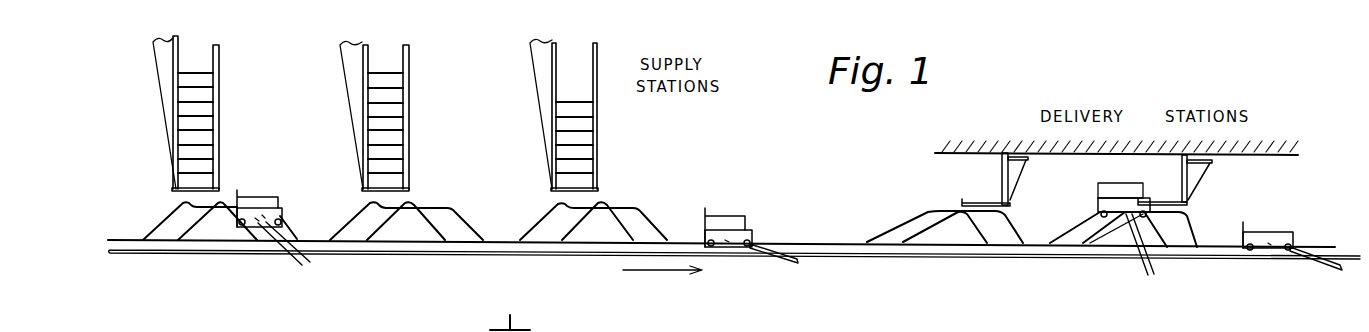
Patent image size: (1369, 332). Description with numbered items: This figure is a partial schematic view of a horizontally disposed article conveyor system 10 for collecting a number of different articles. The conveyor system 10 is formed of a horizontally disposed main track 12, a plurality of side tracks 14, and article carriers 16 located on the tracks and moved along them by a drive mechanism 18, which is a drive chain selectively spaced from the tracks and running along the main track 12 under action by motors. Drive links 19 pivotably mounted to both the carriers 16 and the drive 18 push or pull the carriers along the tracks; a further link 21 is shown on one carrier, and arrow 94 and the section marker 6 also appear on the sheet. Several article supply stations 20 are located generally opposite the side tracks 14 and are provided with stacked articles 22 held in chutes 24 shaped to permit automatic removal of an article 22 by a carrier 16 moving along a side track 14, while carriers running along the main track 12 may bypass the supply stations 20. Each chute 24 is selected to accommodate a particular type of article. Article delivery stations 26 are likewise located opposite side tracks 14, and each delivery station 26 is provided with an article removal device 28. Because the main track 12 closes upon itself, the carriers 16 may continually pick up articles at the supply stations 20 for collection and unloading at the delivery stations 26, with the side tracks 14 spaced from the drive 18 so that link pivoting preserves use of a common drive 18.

The section line 6- 6 is at (480, 328).
The article conveyor system 10 is at (793, 180).
The main track 12 is at (786, 250).
The side track 14 is at (148, 216).
The article carrier 16 is at (283, 210).
The drive mechanism 18 is at (843, 258).
The drive link 19 is at (278, 256).
The article supply station 20 is at (340, 139).
The finger 21 is at (776, 264).
The article 22 is at (203, 101).
The chute 24 is at (172, 125).
The article delivery station 26 is at (989, 175).
The article removal device 28 is at (975, 203).
The direction of travel 94 is at (652, 278).